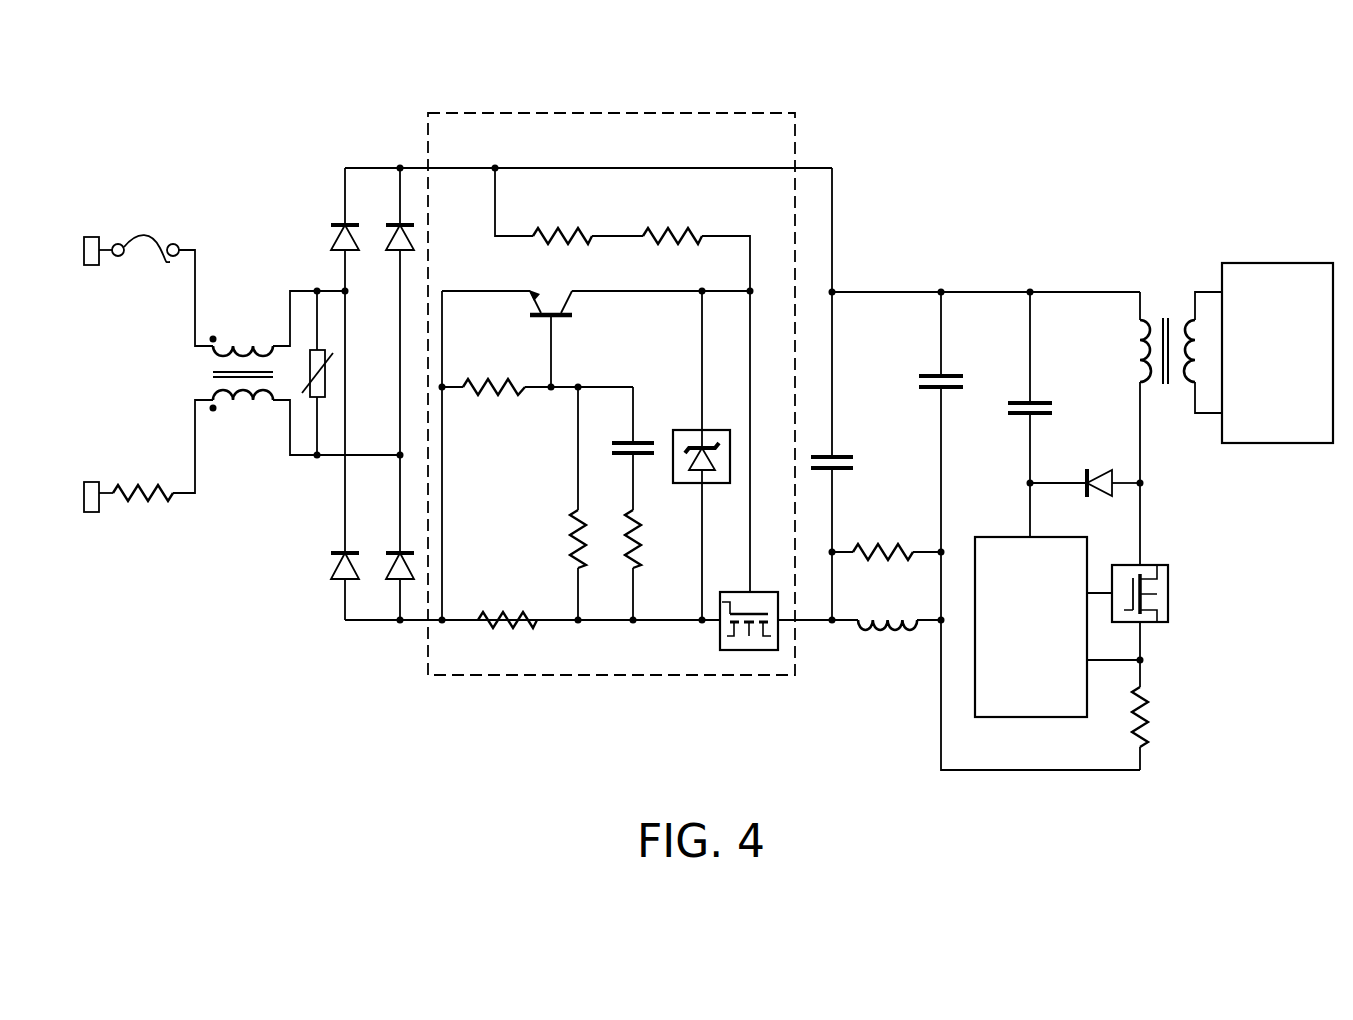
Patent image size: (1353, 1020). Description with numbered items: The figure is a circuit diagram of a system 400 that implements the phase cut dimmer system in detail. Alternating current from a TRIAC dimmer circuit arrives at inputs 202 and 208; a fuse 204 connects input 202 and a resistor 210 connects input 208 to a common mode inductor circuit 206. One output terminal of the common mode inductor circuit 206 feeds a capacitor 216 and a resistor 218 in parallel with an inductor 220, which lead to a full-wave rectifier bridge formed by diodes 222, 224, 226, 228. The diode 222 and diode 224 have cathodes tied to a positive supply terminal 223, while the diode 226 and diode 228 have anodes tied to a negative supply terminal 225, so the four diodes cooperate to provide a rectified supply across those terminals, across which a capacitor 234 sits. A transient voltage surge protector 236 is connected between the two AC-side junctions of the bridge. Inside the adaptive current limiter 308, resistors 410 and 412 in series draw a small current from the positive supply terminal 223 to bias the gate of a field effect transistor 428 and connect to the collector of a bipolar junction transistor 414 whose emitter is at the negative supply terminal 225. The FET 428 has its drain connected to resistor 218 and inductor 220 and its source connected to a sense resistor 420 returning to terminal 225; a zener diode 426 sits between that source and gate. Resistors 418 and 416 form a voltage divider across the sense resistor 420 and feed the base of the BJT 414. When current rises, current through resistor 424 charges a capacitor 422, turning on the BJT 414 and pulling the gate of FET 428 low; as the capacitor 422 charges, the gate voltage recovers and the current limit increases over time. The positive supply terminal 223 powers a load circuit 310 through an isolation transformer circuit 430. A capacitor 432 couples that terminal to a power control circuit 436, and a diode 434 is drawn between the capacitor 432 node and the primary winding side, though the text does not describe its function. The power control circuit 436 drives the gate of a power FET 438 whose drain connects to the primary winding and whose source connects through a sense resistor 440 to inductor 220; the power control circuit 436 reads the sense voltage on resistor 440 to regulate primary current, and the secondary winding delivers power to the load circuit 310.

The system 400 is at (150, 82).
The input 202 is at (90, 237).
The fuse 204 is at (138, 238).
The common mode inductor circuit 206 is at (250, 345).
The input 208 is at (90, 482).
The resistor 210 is at (140, 490).
The transient voltage surge protector 236 is at (335, 350).
The diode 222 is at (336, 222).
The diode 224 is at (390, 222).
The diode 226 is at (336, 551).
The diode 228 is at (390, 551).
The positive supply terminal 223 is at (420, 166).
The negative supply terminal 225 is at (420, 623).
The adaptive current limiter 308 is at (552, 113).
The resistor 410 is at (560, 234).
The resistor 412 is at (670, 234).
The bipolar junction transistor 414 is at (549, 310).
The resistor 416 is at (493, 384).
The resistor 418 is at (588, 527).
The sense resistor 420 is at (506, 616).
The capacitor 422 is at (650, 440).
The resistor 424 is at (642, 526).
The zener diode 426 is at (716, 428).
The field effect transistor 428 is at (766, 592).
The capacitor 216 is at (846, 455).
The resistor 218 is at (880, 548).
The inductor 220 is at (876, 642).
The capacitor 234 is at (926, 372).
The capacitor 432 is at (1046, 400).
The diode 434 is at (1083, 474).
The power control circuit 436 is at (996, 536).
The power FET 438 is at (1156, 565).
The sense resistor 440 is at (1150, 708).
The transformer circuit 430 is at (1169, 298).
The load circuit 310 is at (1298, 263).